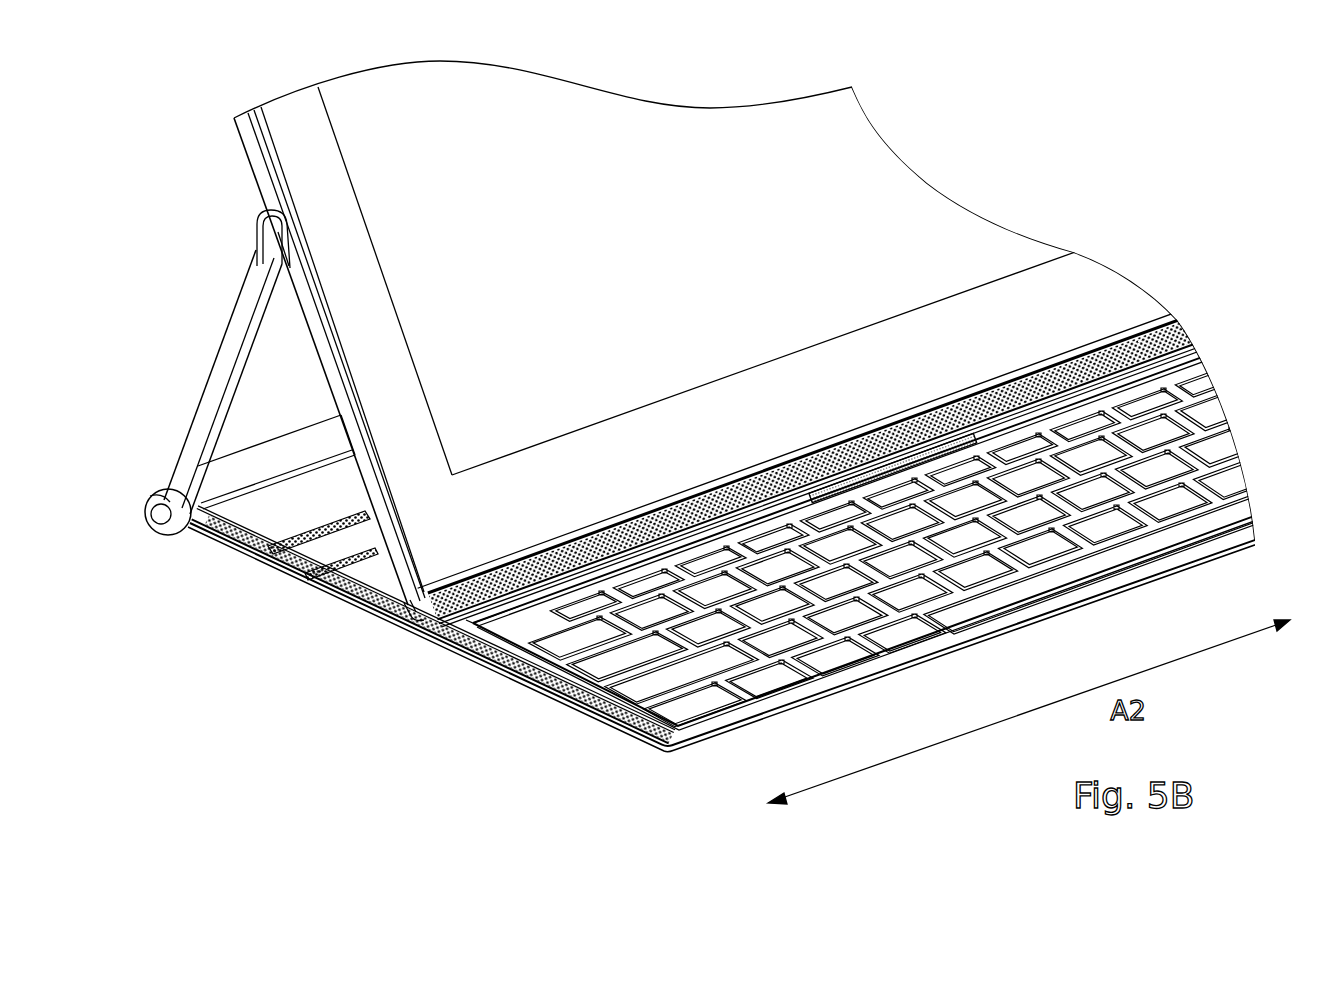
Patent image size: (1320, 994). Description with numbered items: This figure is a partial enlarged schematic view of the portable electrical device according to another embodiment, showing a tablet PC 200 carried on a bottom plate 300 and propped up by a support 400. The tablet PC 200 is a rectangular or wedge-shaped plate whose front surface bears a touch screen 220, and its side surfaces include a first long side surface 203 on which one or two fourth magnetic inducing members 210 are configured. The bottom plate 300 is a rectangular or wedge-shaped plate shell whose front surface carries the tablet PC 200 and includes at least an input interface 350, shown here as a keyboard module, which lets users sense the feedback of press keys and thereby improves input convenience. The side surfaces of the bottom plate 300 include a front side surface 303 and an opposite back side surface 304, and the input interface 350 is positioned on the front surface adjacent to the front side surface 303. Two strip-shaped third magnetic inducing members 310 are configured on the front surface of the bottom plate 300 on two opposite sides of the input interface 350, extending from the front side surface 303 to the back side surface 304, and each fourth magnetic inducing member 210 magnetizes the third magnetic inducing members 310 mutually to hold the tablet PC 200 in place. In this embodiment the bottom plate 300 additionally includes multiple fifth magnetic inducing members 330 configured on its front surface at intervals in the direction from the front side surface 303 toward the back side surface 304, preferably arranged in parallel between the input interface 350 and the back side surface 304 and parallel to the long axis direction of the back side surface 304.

The tablet PC 200 is at (224, 167).
The touch screen 220 is at (892, 207).
The kickstand support 400 is at (201, 366).
The back side surface 304 is at (279, 465).
The bottom plate 300 is at (228, 566).
The fifth magnetic inducing members 330 is at (305, 542).
The fourth magnetic inducing member 210 is at (405, 628).
The first long side surface 203 is at (477, 608).
The third magnetic inducing members 310 is at (552, 690).
The front side surface 303 is at (850, 692).
The input interface 350 is at (1170, 560).